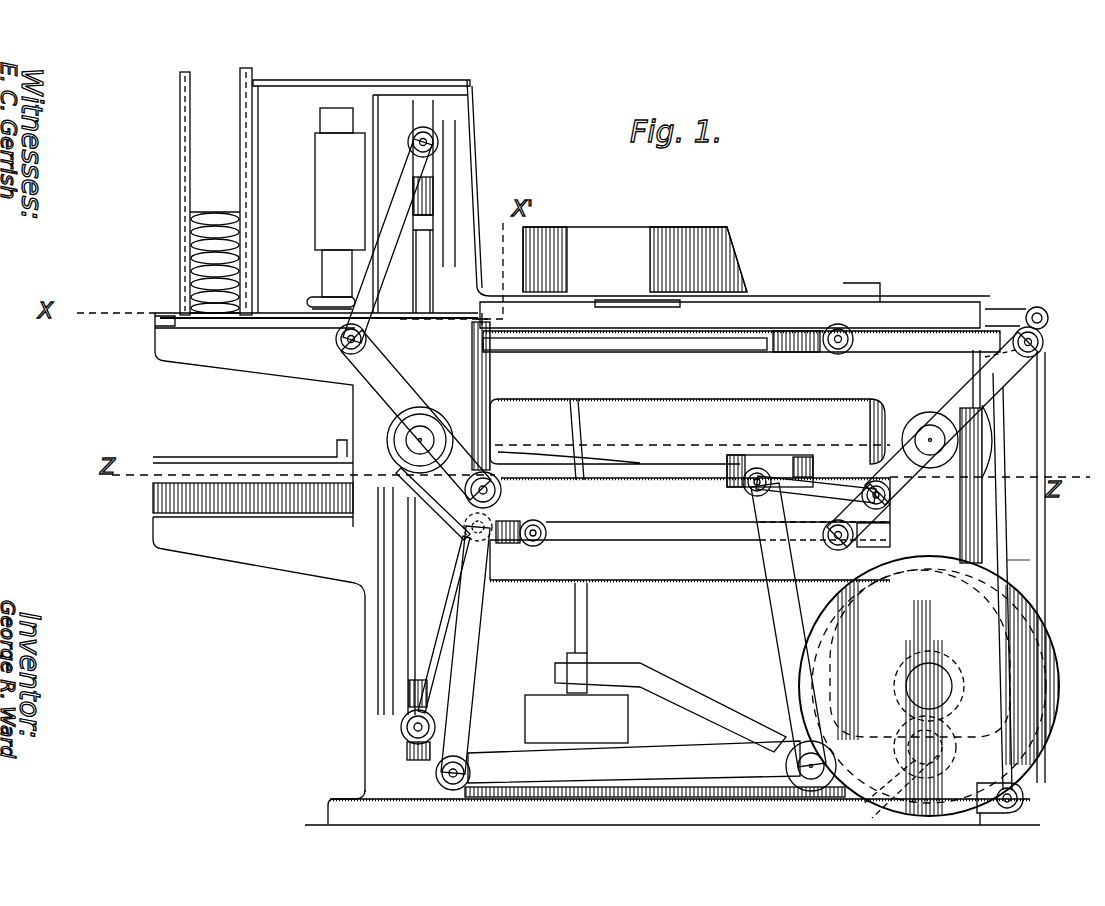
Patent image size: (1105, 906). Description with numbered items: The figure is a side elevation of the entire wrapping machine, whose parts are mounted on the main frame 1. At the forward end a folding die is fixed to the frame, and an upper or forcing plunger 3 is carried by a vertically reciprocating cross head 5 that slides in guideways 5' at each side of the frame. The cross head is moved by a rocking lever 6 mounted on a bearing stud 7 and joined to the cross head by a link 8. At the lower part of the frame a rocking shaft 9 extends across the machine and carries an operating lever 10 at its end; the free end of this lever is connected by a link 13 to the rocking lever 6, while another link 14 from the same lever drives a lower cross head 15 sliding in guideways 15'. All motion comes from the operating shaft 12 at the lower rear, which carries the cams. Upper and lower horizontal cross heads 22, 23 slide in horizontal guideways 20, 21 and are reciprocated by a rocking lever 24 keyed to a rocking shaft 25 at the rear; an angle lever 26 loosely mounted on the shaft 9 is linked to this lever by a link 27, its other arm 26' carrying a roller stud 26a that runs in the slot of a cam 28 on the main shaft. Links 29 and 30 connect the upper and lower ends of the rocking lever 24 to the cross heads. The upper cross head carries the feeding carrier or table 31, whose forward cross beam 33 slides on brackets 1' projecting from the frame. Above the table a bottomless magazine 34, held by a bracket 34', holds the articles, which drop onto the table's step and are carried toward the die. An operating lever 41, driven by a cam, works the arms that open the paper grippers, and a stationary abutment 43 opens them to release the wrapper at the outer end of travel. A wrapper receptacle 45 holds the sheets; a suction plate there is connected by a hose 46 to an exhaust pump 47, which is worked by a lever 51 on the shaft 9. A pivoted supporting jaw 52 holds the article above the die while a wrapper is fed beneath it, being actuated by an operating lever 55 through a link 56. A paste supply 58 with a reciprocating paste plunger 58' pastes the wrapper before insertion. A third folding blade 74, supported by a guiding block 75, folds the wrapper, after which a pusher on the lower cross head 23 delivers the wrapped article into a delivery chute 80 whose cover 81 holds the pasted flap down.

The main frame 1 is at (675, 544).
The brackets 1' is at (315, 552).
The upper or forcing plunger 3 is at (425, 238).
The cross head 5 is at (462, 130).
The guideways 5' is at (466, 179).
The rocking lever 6 is at (372, 385).
The bearing stud 7 is at (418, 440).
The link 8 is at (394, 200).
The rocking shaft 9 is at (797, 768).
The operating lever 10 is at (653, 752).
The operating shaft 12 is at (928, 680).
The link 13 is at (485, 640).
The link 14 is at (435, 656).
The lower cross head 15 is at (377, 728).
The guideways 15' is at (402, 601).
The horizontal guideway 20 is at (730, 327).
The horizontal guideway 21 is at (878, 515).
The upper cross head 22 is at (838, 324).
The lower cross head 23 is at (526, 522).
The rocking lever 24 is at (952, 395).
The rocking shaft 25 is at (928, 440).
The angle lever 26 is at (774, 625).
The roller stud 26a is at (940, 740).
The arm of angle lever 26' is at (884, 789).
The link 27 is at (816, 476).
The cam 28 is at (1000, 630).
The link 29 is at (920, 340).
The link 30 is at (650, 533).
The feeding carrier or table 31 is at (290, 315).
The cross beam 33 is at (152, 320).
The bottomless magazine 34 is at (216, 191).
The bracket 34' is at (361, 179).
The operating lever 41 is at (1022, 558).
The stationary abutment 43 is at (314, 296).
The wrapper receptacle 45 is at (626, 232).
The hose 46 is at (580, 628).
The exhaust pump 47 is at (540, 706).
The lever 51 is at (665, 674).
The jaw 52 is at (802, 330).
The operating lever 55 is at (970, 456).
The link 56 is at (1002, 309).
The paste supply 58 is at (325, 215).
The reciprocating paste plunger 58' is at (319, 118).
The third folding blade 74 is at (657, 463).
The guiding block 75 is at (745, 464).
The delivery chute 80 is at (265, 492).
The cover 81 is at (253, 447).